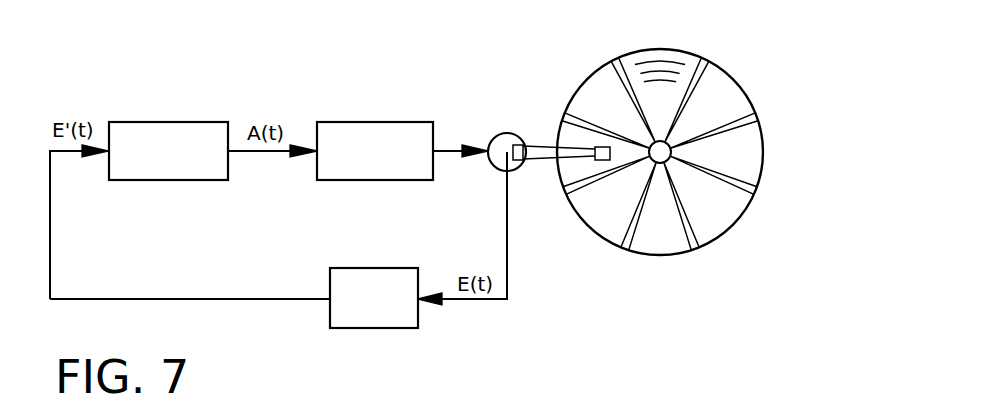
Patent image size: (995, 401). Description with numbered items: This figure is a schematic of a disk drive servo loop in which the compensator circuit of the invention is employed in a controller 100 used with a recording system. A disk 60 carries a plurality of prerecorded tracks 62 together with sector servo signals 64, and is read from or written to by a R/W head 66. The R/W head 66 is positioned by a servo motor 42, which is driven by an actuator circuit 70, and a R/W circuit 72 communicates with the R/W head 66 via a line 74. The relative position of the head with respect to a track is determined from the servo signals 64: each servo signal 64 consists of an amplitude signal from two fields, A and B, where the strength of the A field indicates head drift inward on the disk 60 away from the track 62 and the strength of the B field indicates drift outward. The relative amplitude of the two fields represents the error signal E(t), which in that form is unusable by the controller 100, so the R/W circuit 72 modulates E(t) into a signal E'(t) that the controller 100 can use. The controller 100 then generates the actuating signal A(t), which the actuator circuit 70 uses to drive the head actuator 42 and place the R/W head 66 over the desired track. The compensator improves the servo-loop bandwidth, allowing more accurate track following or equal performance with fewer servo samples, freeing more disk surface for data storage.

The controller 100 is at (155, 122).
The actuator circuit 70 is at (363, 122).
The R/W circuit 72 is at (365, 268).
The line 74 is at (507, 253).
The servo motor 42 is at (507, 133).
The R/W head 66 is at (606, 160).
The disk 60 is at (742, 218).
The sector servo signals 64 is at (558, 110).
The prerecorded tracks 62 is at (660, 58).